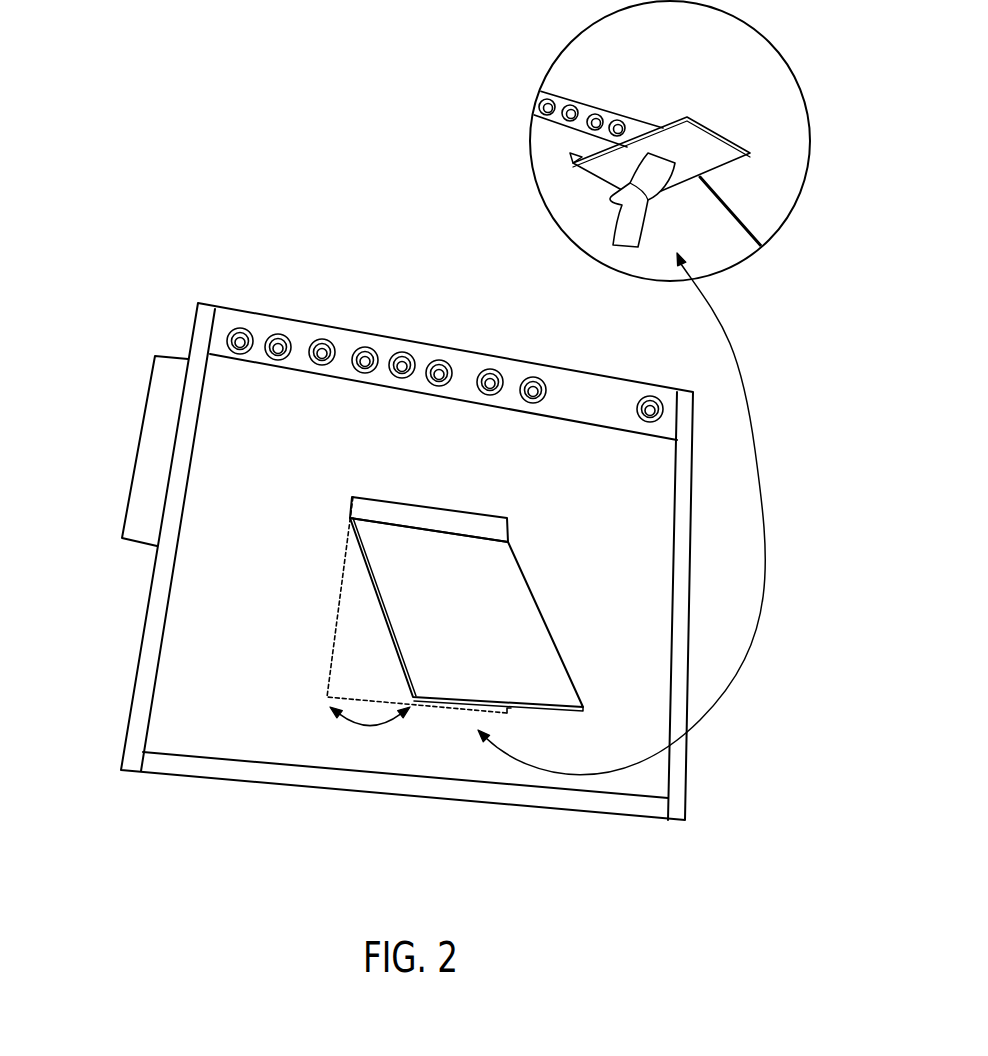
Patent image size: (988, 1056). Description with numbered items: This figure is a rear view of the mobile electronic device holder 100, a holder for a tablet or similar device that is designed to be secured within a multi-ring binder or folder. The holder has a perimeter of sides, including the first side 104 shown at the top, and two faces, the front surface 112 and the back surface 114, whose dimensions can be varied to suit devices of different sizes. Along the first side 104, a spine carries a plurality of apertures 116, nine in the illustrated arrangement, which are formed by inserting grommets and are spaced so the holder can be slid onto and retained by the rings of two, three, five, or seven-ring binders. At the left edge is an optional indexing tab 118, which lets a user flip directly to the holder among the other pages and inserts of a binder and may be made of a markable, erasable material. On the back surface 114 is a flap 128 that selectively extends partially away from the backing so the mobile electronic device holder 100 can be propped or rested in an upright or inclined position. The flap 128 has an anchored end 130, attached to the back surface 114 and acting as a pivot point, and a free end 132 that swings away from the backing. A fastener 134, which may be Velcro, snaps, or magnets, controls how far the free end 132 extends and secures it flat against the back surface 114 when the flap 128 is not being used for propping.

The mobile electronic device holder 100 is at (197, 201).
The first side 104 is at (438, 345).
The front surface 112 is at (271, 748).
The back surface 114 is at (199, 738).
The plurality of apertures 116 is at (324, 344).
The indexing tab 118 is at (139, 428).
The flap 128 is at (471, 604).
The anchored end 130 is at (510, 531).
The free end 132 is at (543, 714).
The fastener 134 is at (650, 222).